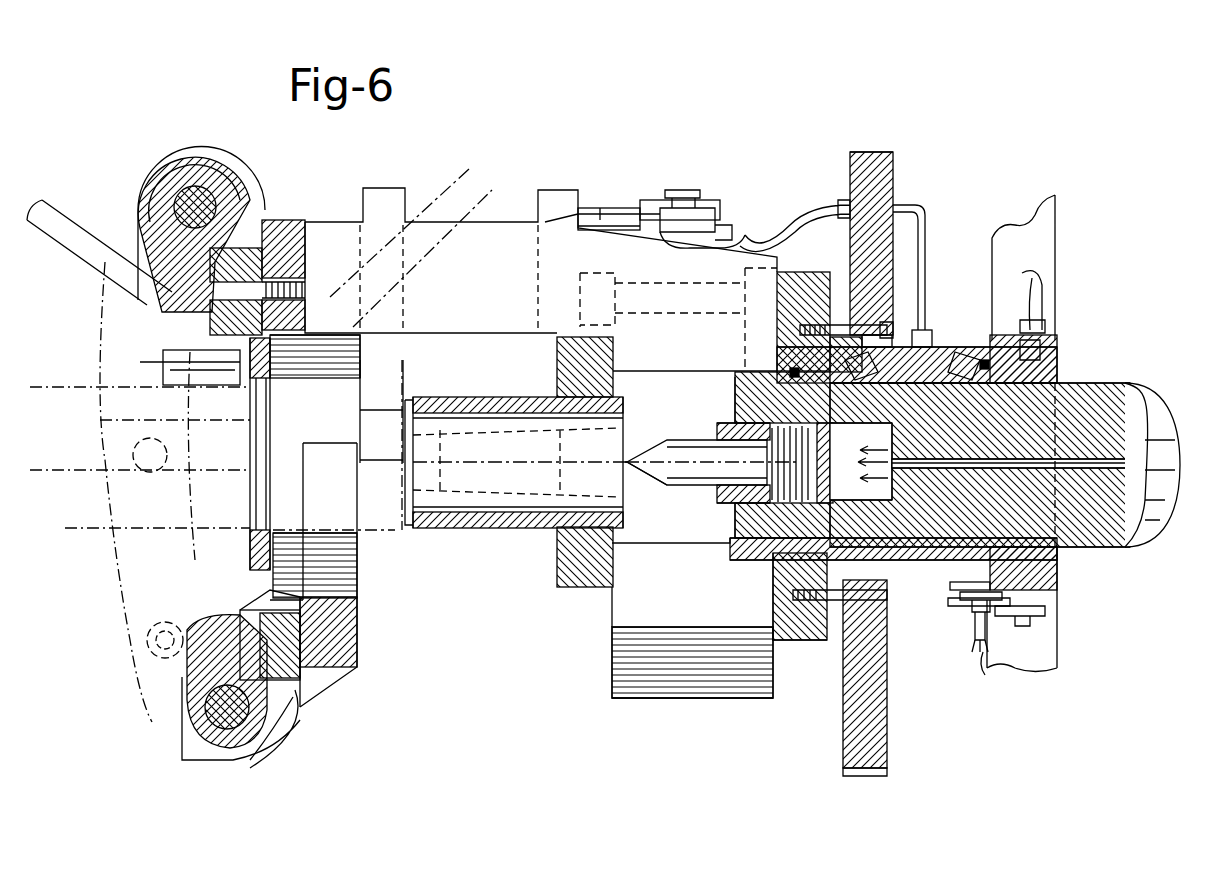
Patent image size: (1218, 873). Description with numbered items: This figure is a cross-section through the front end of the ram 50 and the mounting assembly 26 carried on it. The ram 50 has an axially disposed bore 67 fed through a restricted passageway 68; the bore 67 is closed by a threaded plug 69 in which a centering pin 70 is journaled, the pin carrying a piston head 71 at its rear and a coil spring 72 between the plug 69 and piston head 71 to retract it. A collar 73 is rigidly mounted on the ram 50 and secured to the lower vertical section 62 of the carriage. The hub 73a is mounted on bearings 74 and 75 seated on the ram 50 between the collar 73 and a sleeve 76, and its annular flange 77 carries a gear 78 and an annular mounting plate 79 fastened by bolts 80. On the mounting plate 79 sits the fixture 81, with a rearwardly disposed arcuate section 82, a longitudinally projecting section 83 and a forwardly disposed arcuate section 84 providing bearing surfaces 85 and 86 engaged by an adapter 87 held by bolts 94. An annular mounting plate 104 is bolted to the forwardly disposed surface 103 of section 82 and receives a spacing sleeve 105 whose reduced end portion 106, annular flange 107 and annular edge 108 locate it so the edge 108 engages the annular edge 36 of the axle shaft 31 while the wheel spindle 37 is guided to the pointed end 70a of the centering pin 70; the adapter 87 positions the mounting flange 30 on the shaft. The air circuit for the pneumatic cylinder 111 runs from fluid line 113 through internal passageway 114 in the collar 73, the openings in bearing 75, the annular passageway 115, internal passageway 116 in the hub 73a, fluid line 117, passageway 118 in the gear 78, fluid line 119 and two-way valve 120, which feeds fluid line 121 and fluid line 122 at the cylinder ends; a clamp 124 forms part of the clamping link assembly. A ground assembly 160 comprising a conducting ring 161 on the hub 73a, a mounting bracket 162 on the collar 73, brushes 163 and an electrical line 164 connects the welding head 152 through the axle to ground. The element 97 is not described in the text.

The mounting assembly 26 is at (514, 218).
The mounting flange 30 is at (248, 545).
The axle shaft 31 is at (372, 515).
The annular edge 36 is at (432, 395).
The wheel spindle 37 is at (500, 488).
The ram 50 is at (1100, 380).
The lower vertical section 62 is at (1050, 258).
The bore 67 is at (893, 446).
The restricted passageway 68 is at (1032, 470).
The threaded plug 69 is at (715, 500).
The centering pin 70 is at (672, 440).
The pointed end 70a is at (645, 470).
The piston head 71 is at (832, 432).
The coil spring 72 is at (748, 428).
The collar 73 is at (1045, 577).
The hub 73a is at (945, 350).
The bearing 74 is at (790, 352).
The bearing 75 is at (958, 378).
The sleeve 76 is at (732, 555).
The annular flange 77 is at (800, 310).
The gear 78 is at (887, 690).
The annular mounting plate 79 is at (800, 272).
The bolts 80 is at (952, 608).
The fixture 81 is at (603, 208).
The rearwardly disposed arcuate section 82 is at (688, 688).
The longitudinally projecting section 83 is at (435, 325).
The forwardly disposed arcuate section 84 is at (335, 665).
The bearing surface 85 is at (255, 215).
The bearing surface 86 is at (285, 718).
The adapter 87 is at (255, 602).
The bolts 94 is at (305, 268).
The clamp block 97 is at (205, 385).
The forwardly disposed surface 103 is at (612, 673).
The annular mounting plate 104 is at (582, 590).
The spacing sleeve 105 is at (476, 545).
The reduced end portion 106 is at (628, 545).
The annular flange 107 is at (545, 555).
The annular edge 108 is at (405, 518).
The pneumatic cylinder 111 is at (415, 190).
The fluid line 113 is at (1048, 302).
The internal passageway 114 is at (1045, 350).
The annular passageway 115 is at (125, 315).
The internal passageway 116 is at (128, 648).
The fluid line 117 is at (130, 548).
The passageway 118 is at (100, 478).
The fluid line 119 is at (800, 203).
The two-way valve 120 is at (705, 194).
The fluid line 121 is at (150, 290).
The fluid line 122 is at (720, 222).
The clamp 124 is at (215, 690).
The welding head 152 is at (428, 264).
The ground assembly 160 is at (130, 265).
The electrically conducting ring 161 is at (950, 590).
The mounting bracket 162 is at (1060, 608).
The brushes 163 is at (946, 657).
The electrical line 164 is at (989, 678).